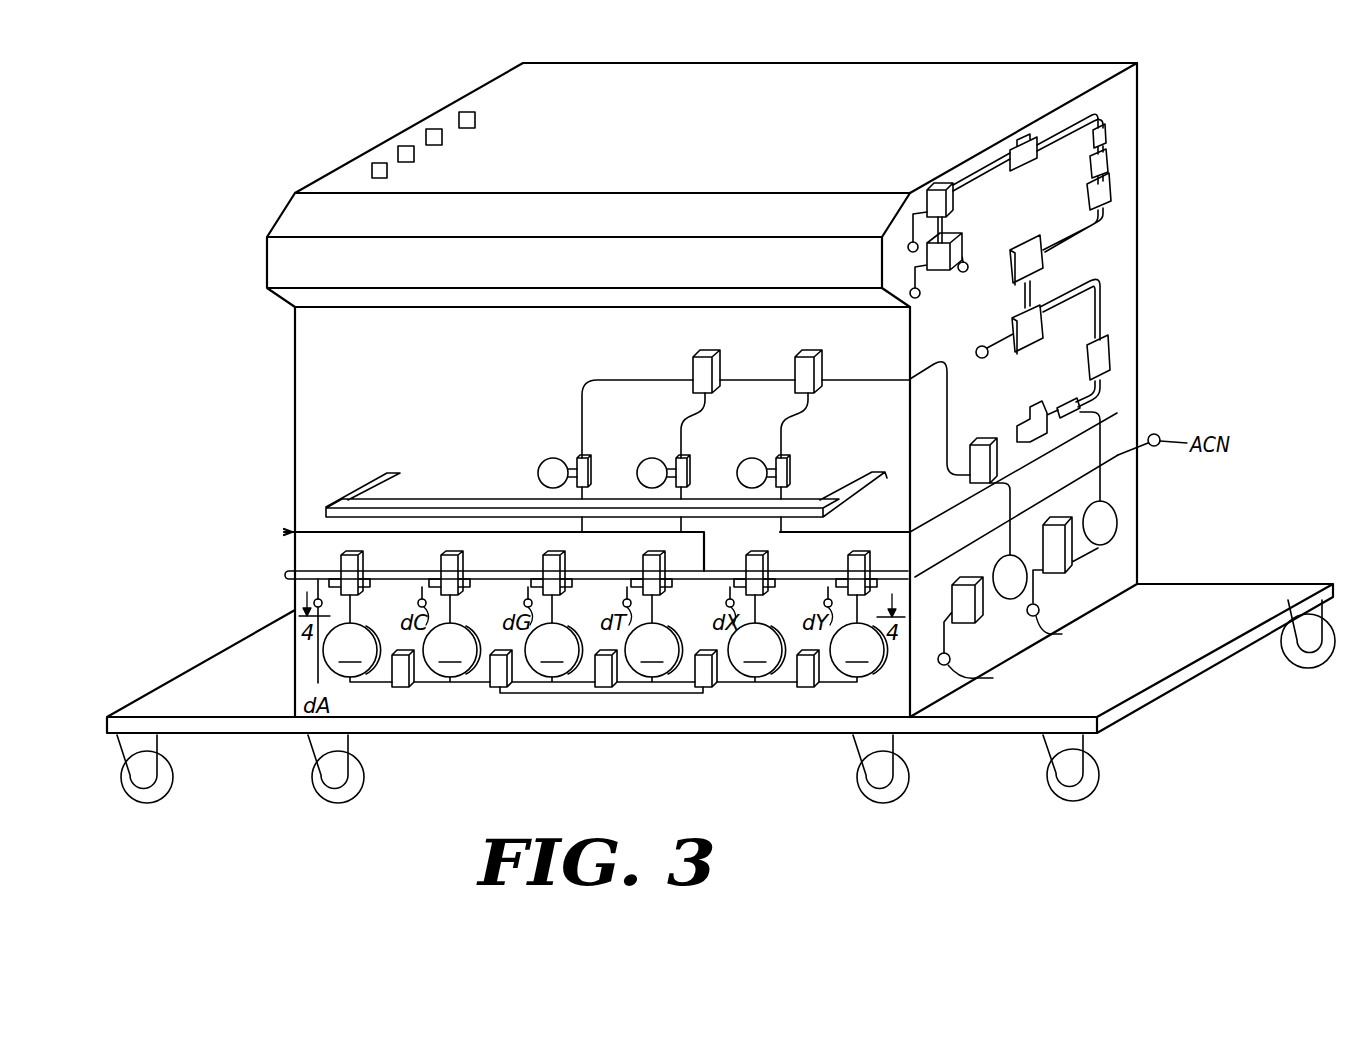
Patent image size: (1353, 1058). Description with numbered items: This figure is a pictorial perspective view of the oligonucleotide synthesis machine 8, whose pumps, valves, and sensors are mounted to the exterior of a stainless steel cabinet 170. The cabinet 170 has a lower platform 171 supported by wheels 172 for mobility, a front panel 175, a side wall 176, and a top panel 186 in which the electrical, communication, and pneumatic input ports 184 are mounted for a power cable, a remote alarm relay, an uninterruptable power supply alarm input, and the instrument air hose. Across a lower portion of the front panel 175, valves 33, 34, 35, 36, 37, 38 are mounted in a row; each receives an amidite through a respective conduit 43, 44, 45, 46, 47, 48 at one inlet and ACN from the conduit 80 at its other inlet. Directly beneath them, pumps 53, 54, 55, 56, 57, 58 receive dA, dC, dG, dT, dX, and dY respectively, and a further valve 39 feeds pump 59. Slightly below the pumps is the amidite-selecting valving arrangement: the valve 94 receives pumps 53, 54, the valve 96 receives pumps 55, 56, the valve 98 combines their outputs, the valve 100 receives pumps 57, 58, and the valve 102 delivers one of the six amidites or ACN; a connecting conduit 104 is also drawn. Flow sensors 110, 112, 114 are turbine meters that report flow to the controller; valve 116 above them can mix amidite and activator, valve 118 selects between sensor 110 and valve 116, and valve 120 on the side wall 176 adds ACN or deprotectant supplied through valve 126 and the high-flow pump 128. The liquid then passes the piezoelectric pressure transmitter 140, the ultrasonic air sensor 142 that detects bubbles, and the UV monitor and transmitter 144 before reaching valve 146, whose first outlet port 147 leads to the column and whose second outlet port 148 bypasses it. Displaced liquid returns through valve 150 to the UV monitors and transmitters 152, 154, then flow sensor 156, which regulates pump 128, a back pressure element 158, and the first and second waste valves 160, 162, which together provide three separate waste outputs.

The DNA synthesizer apparatus 8 is at (936, 42).
The valve 33 is at (363, 555).
The valve 34 is at (463, 555).
The valve 35 is at (565, 555).
The valve 36 is at (665, 555).
The valve 37 is at (760, 552).
The valve 38 is at (860, 552).
The valve 39 is at (965, 625).
The conduit 43 is at (340, 571).
The conduit 44 is at (420, 599).
The conduit 45 is at (524, 599).
The conduit 46 is at (624, 587).
The conduit 47 is at (745, 571).
The conduit 48 is at (842, 571).
The pump 53 is at (357, 652).
The pump 54 is at (452, 652).
The pump 55 is at (553, 652).
The pump 56 is at (656, 652).
The pump 57 is at (757, 652).
The pump 58 is at (853, 652).
The pump 59 is at (1017, 564).
The conduit 80 is at (391, 584).
The valve 94 is at (400, 690).
The valve 96 is at (604, 689).
The valve 98 is at (496, 689).
The valve 100 is at (810, 689).
The valve 102 is at (703, 689).
The tube 104 is at (550, 695).
The flow sensor 110 is at (551, 458).
The flow sensor 112 is at (650, 458).
The flow sensor 114 is at (757, 458).
The valve 116 is at (712, 352).
The valve 118 is at (812, 352).
The valve 120 is at (991, 415).
The valve 126 is at (1062, 568).
The pump 128 is at (1118, 523).
The piezoelectric pressure transmitter 140 is at (1040, 403).
The ultrasonic air sensor 142 is at (1082, 408).
The UV monitor and transmitter 144 is at (1111, 358).
The valve 146 is at (1038, 331).
The first outlet port 147 is at (976, 349).
The second outlet port 148 is at (1022, 300).
The valve 150 is at (1036, 258).
The first UV monitor and transmitter 152 is at (1110, 198).
The second UV monitor and transmitter 154 is at (1108, 167).
The flow sensor 156 is at (1108, 134).
The valve 158 is at (1022, 138).
The first waste valve 160 is at (941, 182).
The second waste valve 162 is at (947, 234).
The cabinet 170 is at (672, 75).
The lower platform 171 is at (187, 690).
The wheels 172 is at (172, 773).
The front panel 175 is at (389, 391).
The side wall 176 is at (1127, 85).
The electrical, communication, and pneumatic input ports 184 is at (433, 106).
The top panel 186 is at (645, 171).